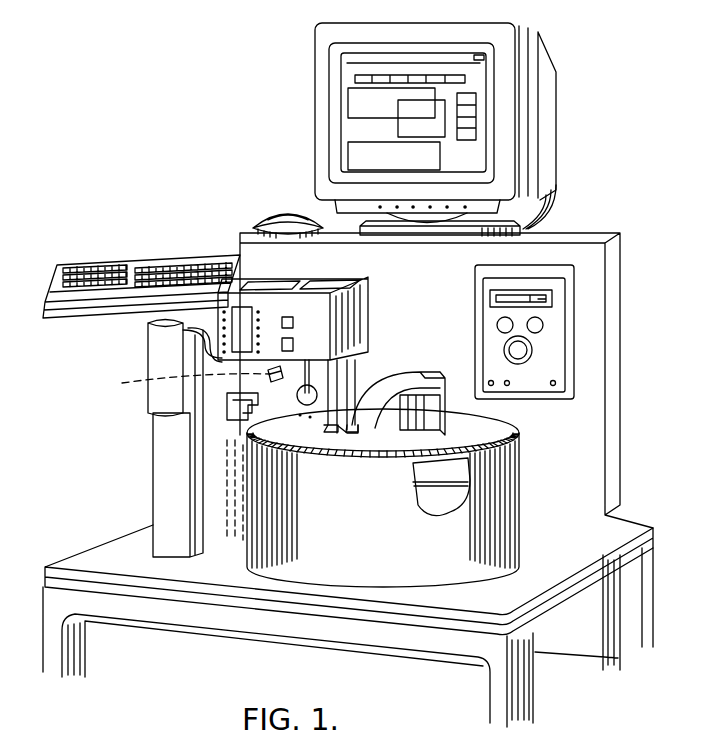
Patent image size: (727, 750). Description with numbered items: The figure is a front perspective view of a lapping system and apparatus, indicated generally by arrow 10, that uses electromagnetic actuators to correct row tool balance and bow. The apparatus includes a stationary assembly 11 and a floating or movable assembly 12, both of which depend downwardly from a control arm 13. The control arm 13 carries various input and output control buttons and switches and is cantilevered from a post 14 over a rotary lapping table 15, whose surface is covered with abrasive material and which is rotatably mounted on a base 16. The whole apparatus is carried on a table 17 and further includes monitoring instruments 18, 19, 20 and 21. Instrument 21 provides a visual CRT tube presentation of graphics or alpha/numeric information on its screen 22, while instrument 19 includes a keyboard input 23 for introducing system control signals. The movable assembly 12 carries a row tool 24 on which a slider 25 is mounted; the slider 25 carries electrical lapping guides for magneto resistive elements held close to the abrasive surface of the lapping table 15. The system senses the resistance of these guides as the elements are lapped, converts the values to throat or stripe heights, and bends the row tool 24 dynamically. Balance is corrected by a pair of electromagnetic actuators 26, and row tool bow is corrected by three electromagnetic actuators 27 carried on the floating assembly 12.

The lapping system and apparatus 10 is at (127, 501).
The stationary assembly 11 is at (290, 440).
The floating or movable assembly 12 is at (360, 362).
The control arm 13 is at (202, 333).
The post 14 is at (165, 461).
The rotary lapping table 15 is at (488, 417).
The base 16 is at (460, 482).
The table 17 is at (587, 538).
The monitoring instrument 18 is at (552, 352).
The monitoring instrument 19 is at (141, 273).
The monitoring instrument 20 is at (303, 210).
The monitoring instrument 21 is at (325, 37).
The screen 22 is at (474, 76).
The keyboard input 23 is at (95, 265).
The row tool 24 is at (338, 433).
The slider 25 is at (353, 433).
The electromagnetic actuators 26 is at (191, 379).
The electromagnetic actuator 27 is at (290, 416).